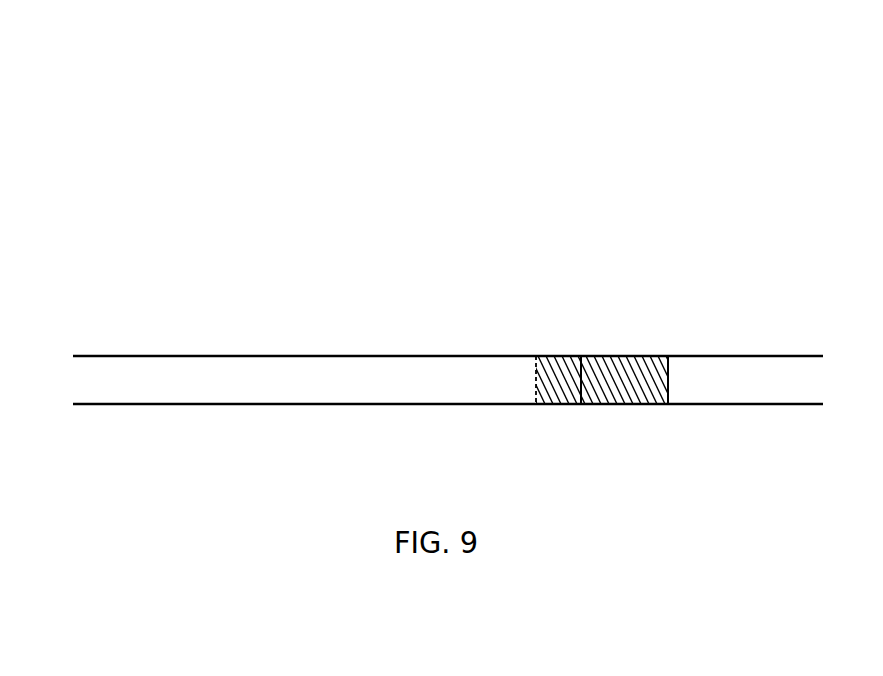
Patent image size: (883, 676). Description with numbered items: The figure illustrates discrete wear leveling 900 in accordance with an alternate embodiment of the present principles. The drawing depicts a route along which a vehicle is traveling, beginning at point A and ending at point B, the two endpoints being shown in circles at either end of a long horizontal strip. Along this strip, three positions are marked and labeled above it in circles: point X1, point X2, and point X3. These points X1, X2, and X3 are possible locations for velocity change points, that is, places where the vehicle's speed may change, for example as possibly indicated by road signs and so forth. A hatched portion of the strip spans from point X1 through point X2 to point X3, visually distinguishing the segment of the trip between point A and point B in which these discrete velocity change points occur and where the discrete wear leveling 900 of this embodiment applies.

The discrete wear leveling 900 is at (733, 128).
The point A is at (92, 380).
The point B is at (806, 380).
The velocity change point location X1 is at (534, 349).
The velocity change point location X2 is at (581, 349).
The velocity change point location X3 is at (670, 350).